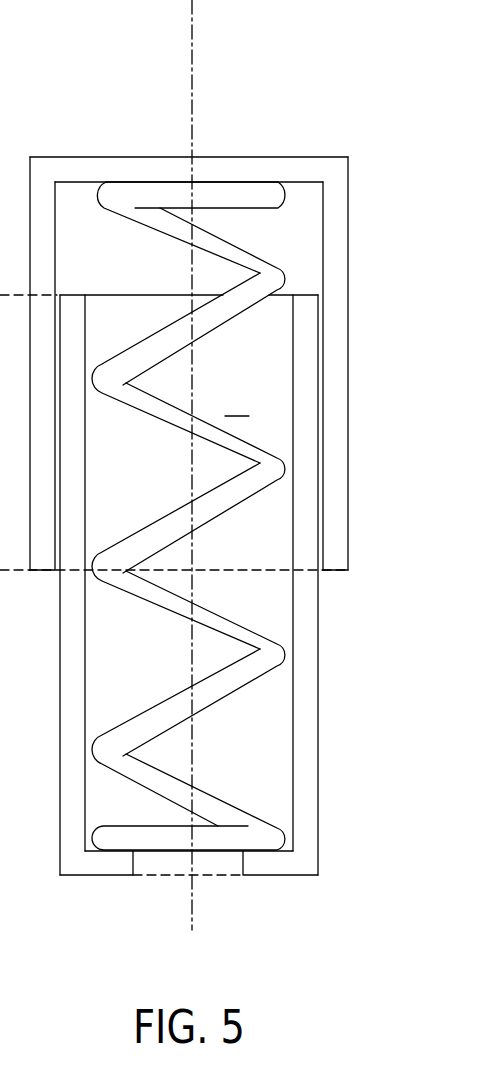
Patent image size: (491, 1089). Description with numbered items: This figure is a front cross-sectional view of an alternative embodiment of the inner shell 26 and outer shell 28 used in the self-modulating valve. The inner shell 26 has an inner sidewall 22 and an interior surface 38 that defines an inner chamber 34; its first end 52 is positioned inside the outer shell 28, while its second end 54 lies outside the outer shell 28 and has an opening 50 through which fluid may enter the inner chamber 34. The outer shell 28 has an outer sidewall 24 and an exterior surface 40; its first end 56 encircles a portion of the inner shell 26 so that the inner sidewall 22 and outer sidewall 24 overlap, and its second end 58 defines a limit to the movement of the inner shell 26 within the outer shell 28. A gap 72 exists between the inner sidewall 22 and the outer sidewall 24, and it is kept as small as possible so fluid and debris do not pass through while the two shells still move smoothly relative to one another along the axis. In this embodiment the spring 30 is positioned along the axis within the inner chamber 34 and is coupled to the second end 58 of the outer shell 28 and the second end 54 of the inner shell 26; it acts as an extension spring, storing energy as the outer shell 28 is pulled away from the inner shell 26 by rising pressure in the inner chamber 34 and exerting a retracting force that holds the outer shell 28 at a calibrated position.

The inner sidewall 22 is at (305, 439).
The outer sidewall 24 is at (332, 364).
The inner shell 26 is at (318, 761).
The outer shell 28 is at (350, 228).
The spring 30 is at (217, 233).
The inner chamber 34 is at (154, 585).
The interior surface 38 is at (78, 347).
The exterior surface 40 is at (348, 531).
The opening 50 is at (172, 893).
The first end 52 is at (123, 293).
The second end 54 is at (70, 877).
The first end 56 is at (40, 572).
The second end 58 is at (47, 157).
The gap 72 is at (327, 588).